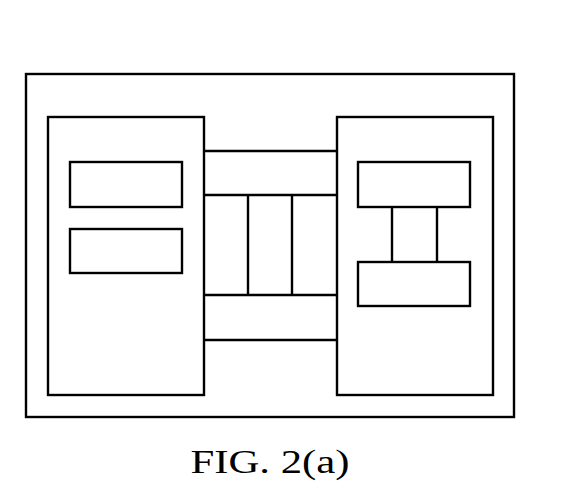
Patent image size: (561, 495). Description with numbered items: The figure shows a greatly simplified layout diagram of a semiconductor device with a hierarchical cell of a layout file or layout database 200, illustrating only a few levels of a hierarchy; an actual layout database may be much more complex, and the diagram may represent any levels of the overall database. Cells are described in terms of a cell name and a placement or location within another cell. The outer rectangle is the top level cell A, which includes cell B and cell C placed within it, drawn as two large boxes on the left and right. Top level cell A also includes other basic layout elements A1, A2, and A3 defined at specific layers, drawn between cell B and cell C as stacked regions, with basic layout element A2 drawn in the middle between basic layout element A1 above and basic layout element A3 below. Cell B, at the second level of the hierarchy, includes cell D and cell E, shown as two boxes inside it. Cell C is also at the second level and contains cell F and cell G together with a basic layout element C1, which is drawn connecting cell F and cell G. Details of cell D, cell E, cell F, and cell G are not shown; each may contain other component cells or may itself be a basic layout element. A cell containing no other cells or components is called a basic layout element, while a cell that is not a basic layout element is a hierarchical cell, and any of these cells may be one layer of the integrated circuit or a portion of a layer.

The layout database 200 is at (258, 73).
The top level cell A is at (270, 97).
The cell B is at (126, 256).
The cell C is at (415, 256).
The cell D is at (126, 184).
The cell E is at (126, 251).
The cell F is at (414, 184).
The cell G is at (414, 284).
The basic layout element A1 is at (270, 173).
The basic layout element A2 is at (270, 245).
The basic layout element A3 is at (270, 317).
The basic layout element C1 is at (414, 234).